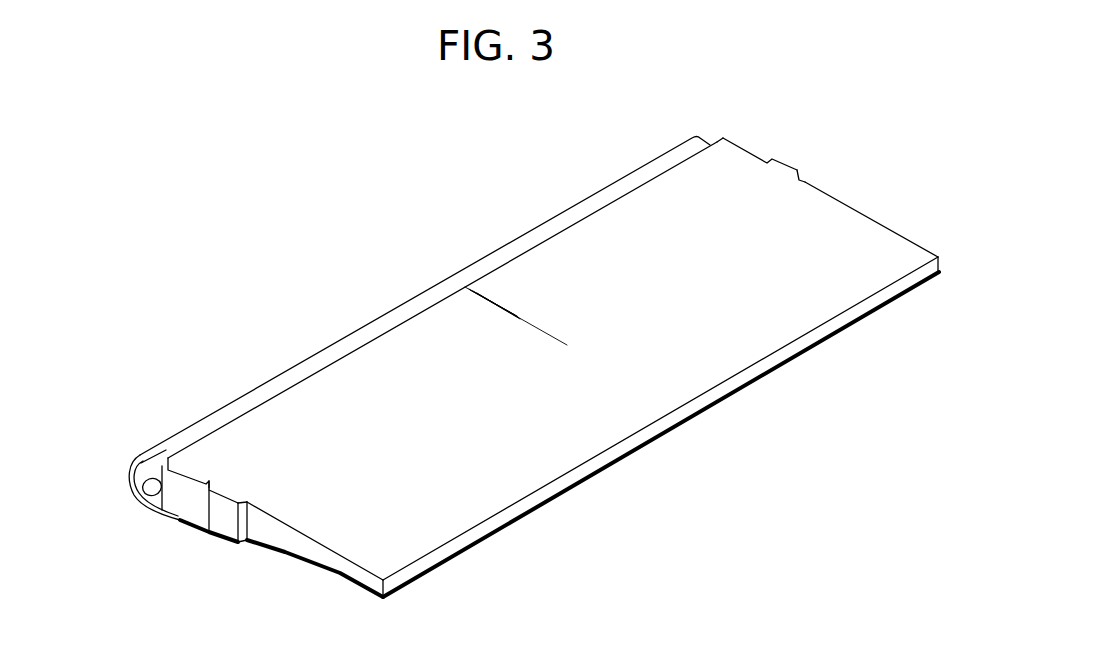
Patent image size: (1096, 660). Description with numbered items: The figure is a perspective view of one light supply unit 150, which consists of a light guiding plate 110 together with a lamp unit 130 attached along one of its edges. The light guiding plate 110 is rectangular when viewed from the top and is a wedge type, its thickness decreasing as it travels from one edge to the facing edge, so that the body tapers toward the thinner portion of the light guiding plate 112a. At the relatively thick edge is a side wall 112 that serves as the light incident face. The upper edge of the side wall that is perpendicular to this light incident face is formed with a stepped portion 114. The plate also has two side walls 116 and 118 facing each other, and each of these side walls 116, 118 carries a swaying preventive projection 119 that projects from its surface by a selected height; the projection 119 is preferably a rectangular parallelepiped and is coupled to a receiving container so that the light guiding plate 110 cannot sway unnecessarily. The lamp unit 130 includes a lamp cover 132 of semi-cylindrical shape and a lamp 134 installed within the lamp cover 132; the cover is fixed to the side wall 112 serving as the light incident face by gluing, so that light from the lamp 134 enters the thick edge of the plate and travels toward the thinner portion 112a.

The light guiding plate 110 is at (288, 570).
The side wall 112 is at (180, 520).
The thinner portion of the light guiding plate 112a is at (665, 425).
The stepped portion 114 is at (288, 387).
The side wall 116 is at (343, 570).
The side wall 118 is at (735, 162).
The swaying preventive projection 119 is at (790, 172).
The lamp unit 130 is at (142, 515).
The lamp cover 132 is at (408, 301).
The lamp 134 is at (147, 490).
The light supply unit 150 is at (558, 180).